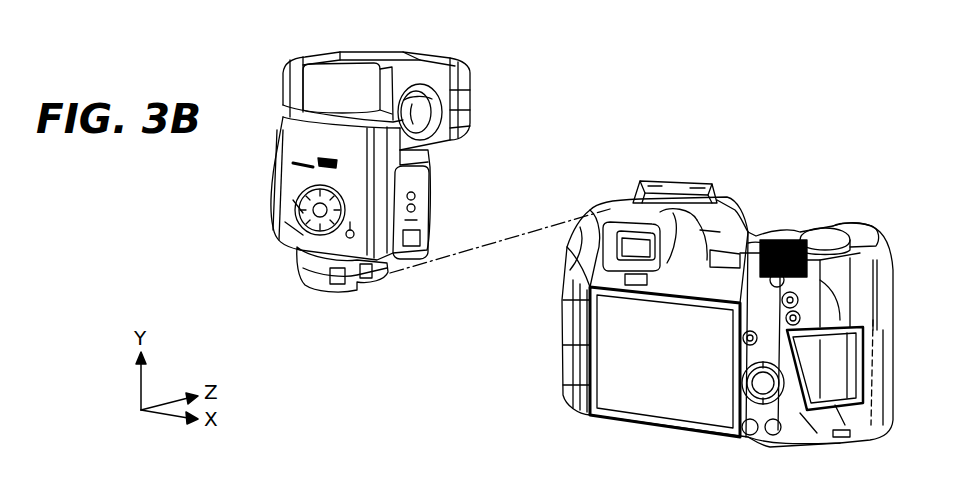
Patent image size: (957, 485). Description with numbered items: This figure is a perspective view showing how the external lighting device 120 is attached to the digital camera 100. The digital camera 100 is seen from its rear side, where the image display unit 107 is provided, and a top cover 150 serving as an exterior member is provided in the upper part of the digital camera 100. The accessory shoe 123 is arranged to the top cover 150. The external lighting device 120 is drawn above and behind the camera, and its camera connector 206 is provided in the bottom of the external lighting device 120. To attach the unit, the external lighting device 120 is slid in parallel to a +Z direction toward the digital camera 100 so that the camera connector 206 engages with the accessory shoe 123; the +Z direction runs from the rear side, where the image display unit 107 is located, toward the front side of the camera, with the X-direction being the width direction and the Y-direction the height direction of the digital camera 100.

The external lighting device 120 is at (266, 58).
The camera connector 206 is at (336, 292).
The digital camera 100 is at (594, 178).
The accessory shoe 123 is at (670, 190).
The top cover 150 is at (748, 208).
The image display unit 107 is at (633, 388).